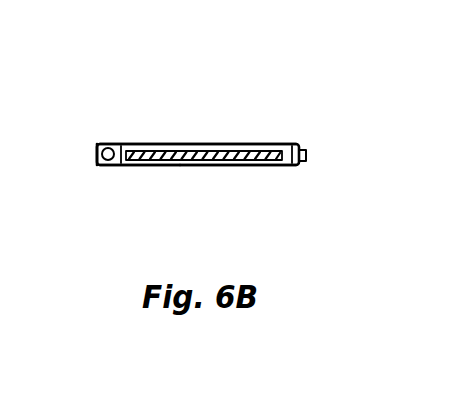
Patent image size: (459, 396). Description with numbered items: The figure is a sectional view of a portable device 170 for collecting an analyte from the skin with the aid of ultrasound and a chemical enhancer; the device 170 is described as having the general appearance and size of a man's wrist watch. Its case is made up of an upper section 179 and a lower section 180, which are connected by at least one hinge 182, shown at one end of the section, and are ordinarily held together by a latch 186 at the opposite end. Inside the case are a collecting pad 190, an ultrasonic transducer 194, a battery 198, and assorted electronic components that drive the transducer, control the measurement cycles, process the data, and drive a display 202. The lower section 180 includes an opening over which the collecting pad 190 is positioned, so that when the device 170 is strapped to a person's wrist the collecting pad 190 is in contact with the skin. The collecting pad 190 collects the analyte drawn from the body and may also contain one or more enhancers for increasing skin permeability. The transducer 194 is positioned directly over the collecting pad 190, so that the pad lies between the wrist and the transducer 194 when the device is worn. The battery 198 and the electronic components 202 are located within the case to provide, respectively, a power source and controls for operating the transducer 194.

The portable device 170 is at (210, 102).
The upper section 179 is at (157, 143).
The lower section 180 is at (120, 166).
The hinge 182 is at (104, 158).
The latch 186 is at (308, 155).
The collecting pad 190 is at (183, 166).
The ultrasonic transducer 194 is at (238, 143).
The battery 198 is at (107, 143).
The display 202 is at (293, 166).